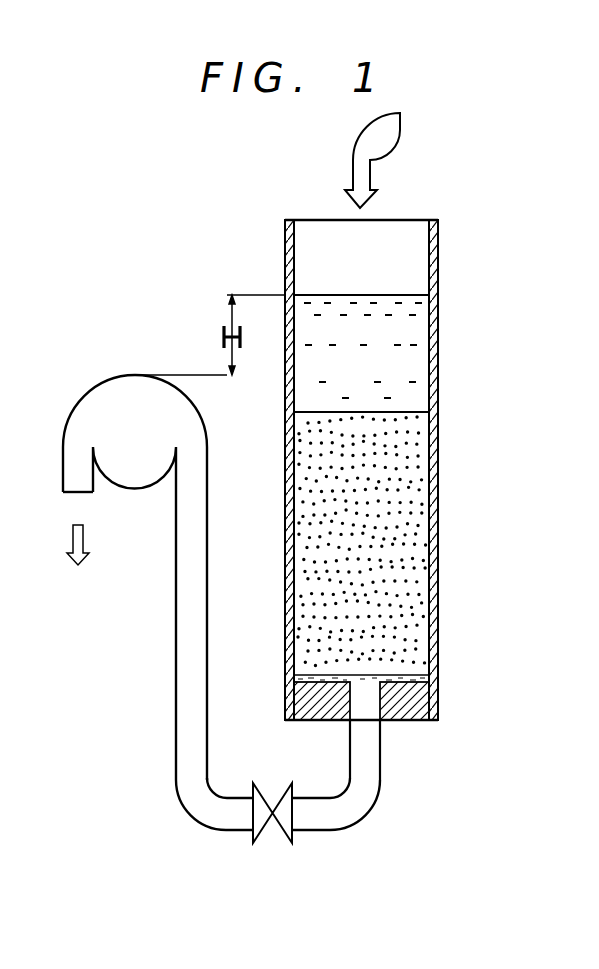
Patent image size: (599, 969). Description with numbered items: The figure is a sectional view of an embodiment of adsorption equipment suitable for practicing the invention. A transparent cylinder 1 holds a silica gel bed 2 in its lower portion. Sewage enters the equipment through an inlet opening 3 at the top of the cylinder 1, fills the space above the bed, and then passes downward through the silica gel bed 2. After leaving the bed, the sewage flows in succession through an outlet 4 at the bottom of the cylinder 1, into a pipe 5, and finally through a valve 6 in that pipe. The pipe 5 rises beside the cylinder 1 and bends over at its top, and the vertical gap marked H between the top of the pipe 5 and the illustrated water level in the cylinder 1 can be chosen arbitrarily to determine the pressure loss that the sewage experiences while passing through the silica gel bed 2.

The transparent cylinder 1 is at (438, 328).
The silica gel bed 2 is at (387, 522).
The inlet opening 3 is at (333, 233).
The outlet 4 is at (360, 710).
The pipe 5 is at (348, 805).
The valve 6 is at (272, 813).